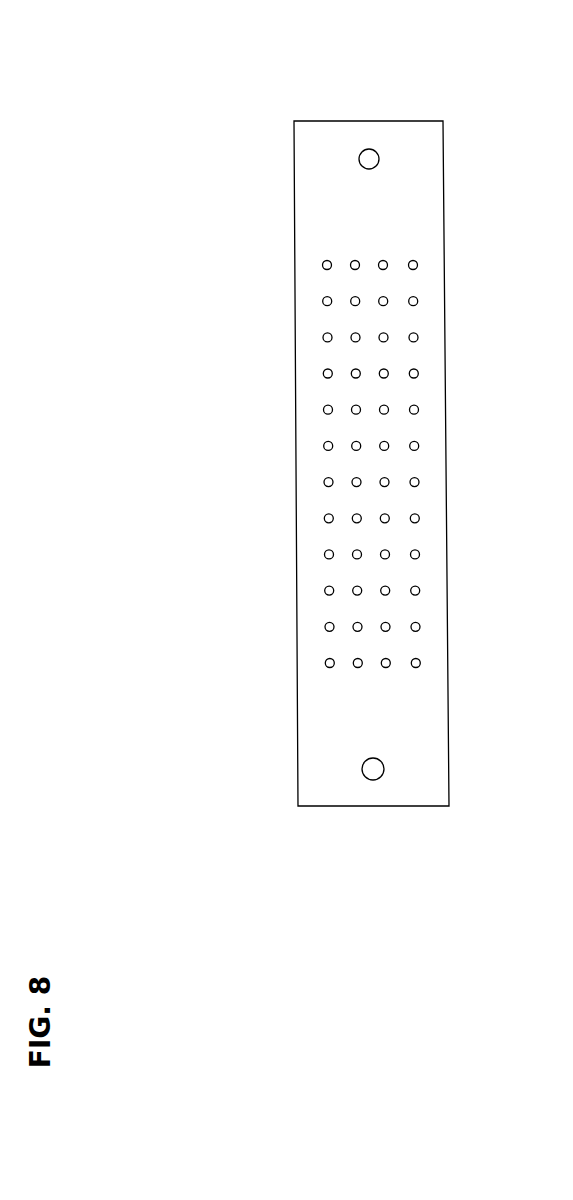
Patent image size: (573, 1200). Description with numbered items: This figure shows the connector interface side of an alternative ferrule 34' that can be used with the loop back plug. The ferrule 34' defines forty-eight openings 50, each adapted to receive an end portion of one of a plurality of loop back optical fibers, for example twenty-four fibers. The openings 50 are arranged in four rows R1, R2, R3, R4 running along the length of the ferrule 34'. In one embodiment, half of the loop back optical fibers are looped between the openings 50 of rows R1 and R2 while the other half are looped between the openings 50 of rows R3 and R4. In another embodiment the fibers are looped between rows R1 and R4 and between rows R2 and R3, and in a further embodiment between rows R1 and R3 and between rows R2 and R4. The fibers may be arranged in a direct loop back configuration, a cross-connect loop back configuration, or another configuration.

The alternative ferrule 34' is at (328, 463).
The first row of openings R1 is at (316, 240).
The second row of openings R2 is at (348, 239).
The third row of openings R3 is at (392, 236).
The fourth row of openings R4 is at (423, 237).
The opening 50 is at (323, 478).